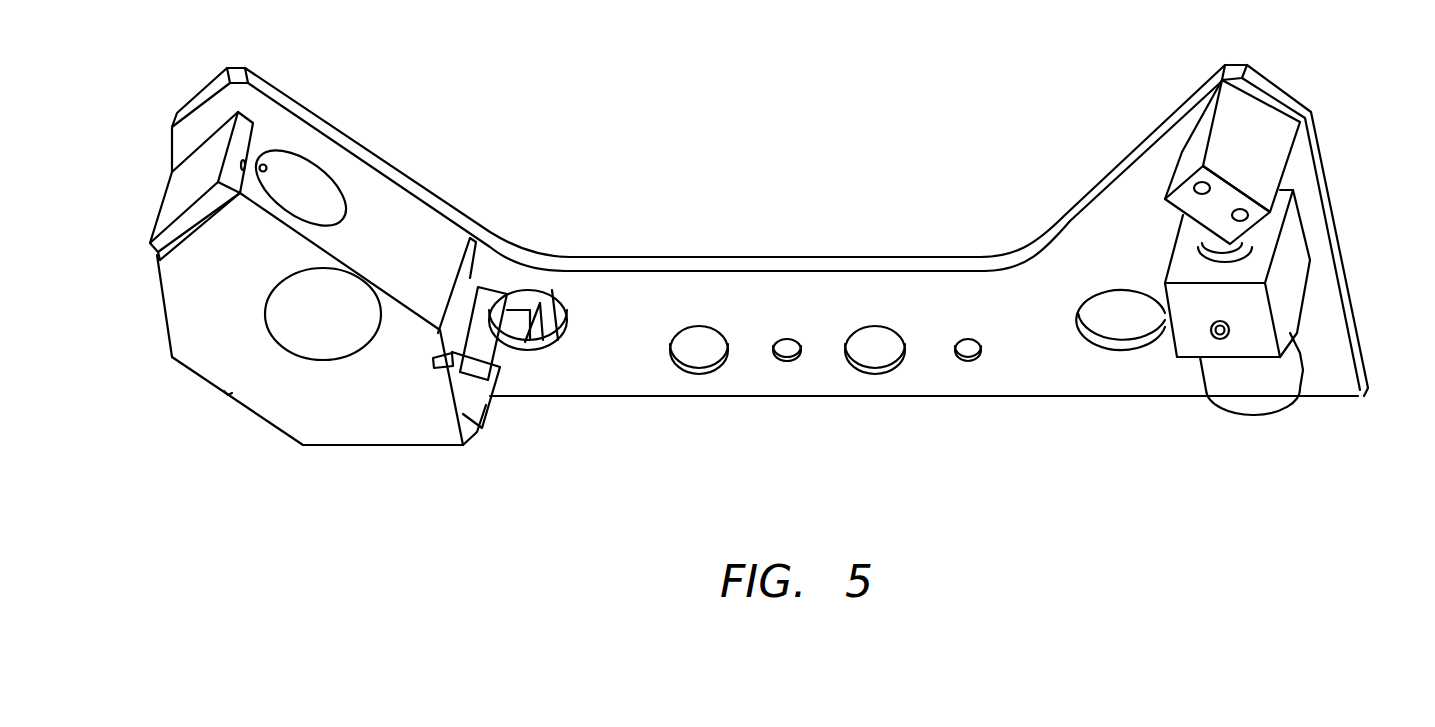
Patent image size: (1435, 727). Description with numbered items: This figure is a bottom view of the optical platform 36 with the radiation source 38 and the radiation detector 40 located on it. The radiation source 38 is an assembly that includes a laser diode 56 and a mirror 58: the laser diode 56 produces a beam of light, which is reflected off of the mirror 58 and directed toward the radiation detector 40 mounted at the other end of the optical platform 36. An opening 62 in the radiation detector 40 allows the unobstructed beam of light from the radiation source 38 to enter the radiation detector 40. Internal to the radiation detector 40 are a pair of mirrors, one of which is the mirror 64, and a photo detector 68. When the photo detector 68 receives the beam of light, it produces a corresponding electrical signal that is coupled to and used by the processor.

The optical platform 36 is at (798, 288).
The radiation source 38 is at (1324, 253).
The radiation detector 40 is at (387, 227).
The laser diode 56 is at (1287, 275).
The mirror 58 is at (1253, 138).
The opening 62 is at (300, 183).
The mirror 64 is at (190, 193).
The photo detector 68 is at (490, 393).